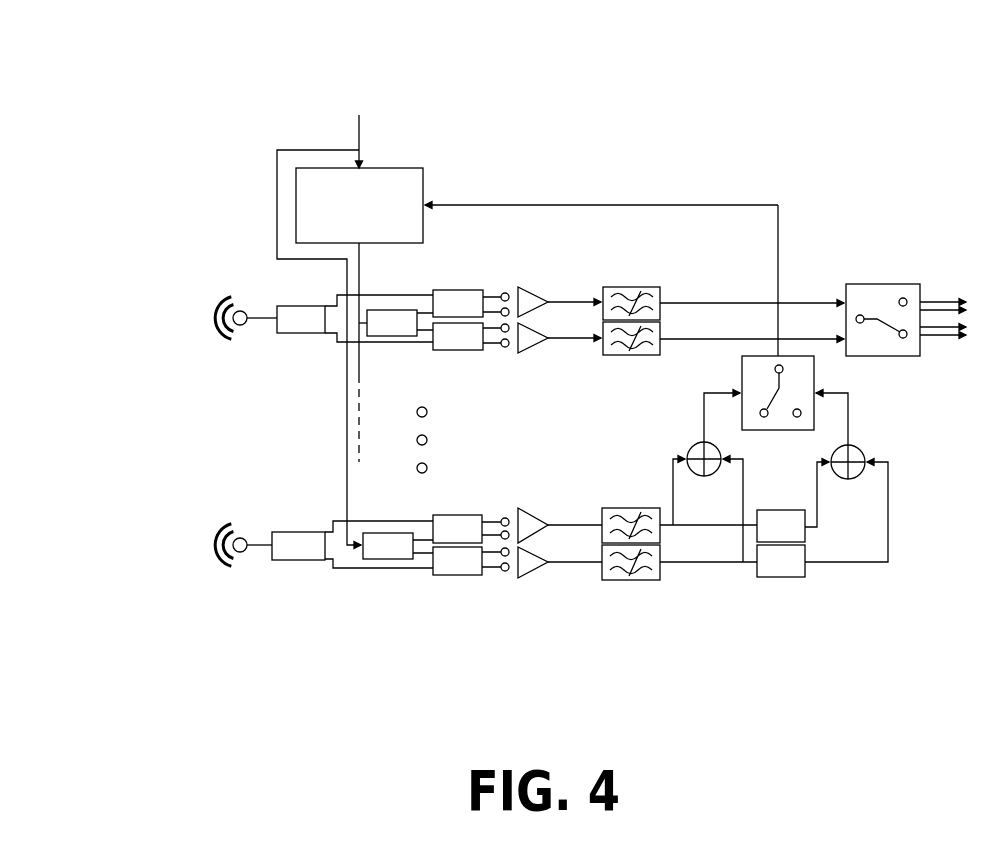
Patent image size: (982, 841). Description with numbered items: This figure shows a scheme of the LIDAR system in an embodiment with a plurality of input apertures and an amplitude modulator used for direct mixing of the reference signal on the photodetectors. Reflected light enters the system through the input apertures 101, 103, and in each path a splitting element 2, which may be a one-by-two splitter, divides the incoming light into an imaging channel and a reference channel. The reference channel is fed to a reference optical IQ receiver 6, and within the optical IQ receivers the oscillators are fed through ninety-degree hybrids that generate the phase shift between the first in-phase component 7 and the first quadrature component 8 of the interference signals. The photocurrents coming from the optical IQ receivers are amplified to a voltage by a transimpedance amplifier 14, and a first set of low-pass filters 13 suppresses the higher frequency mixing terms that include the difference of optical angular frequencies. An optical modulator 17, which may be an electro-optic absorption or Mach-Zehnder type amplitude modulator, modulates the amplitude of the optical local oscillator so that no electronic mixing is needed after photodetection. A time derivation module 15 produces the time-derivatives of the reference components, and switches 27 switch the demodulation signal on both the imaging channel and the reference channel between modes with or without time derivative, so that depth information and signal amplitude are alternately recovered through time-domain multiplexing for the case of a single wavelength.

The optical modulator 17 is at (400, 182).
The first in-phase component 7 is at (506, 292).
The first quadrature component 8 is at (507, 339).
The first set of low-pass filters 13 is at (627, 300).
The switches 27 is at (783, 358).
The input aperture 101 is at (220, 302).
The input aperture 103 is at (213, 528).
The splitting element 2 is at (395, 558).
The reference optical IQ receiver 6 is at (449, 540).
The transimpedance amplifier 14 is at (537, 570).
The time derivation module 15 is at (800, 527).